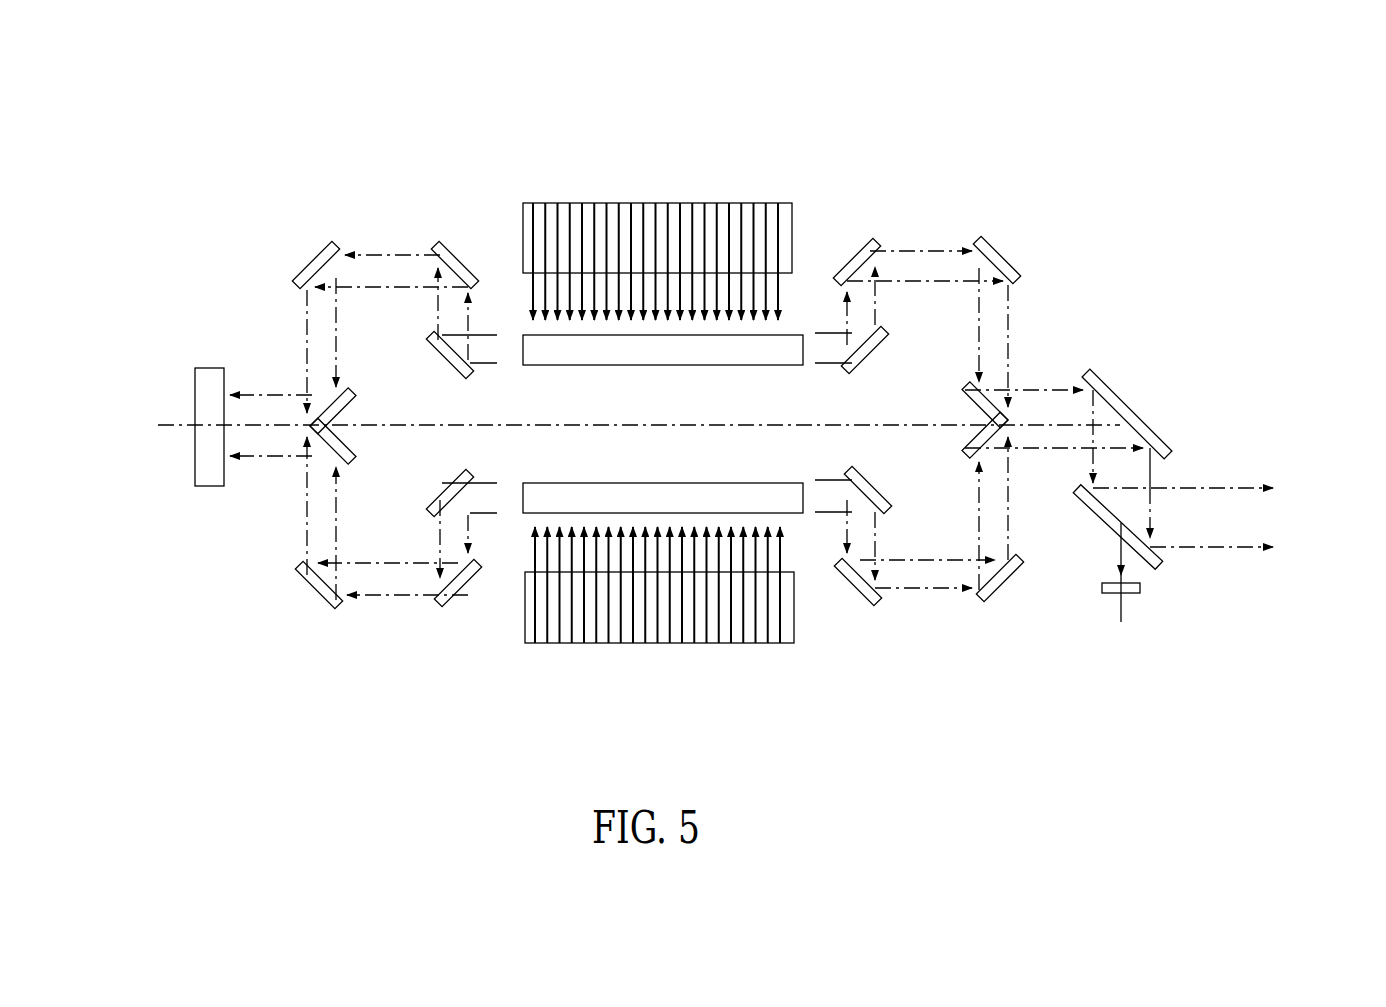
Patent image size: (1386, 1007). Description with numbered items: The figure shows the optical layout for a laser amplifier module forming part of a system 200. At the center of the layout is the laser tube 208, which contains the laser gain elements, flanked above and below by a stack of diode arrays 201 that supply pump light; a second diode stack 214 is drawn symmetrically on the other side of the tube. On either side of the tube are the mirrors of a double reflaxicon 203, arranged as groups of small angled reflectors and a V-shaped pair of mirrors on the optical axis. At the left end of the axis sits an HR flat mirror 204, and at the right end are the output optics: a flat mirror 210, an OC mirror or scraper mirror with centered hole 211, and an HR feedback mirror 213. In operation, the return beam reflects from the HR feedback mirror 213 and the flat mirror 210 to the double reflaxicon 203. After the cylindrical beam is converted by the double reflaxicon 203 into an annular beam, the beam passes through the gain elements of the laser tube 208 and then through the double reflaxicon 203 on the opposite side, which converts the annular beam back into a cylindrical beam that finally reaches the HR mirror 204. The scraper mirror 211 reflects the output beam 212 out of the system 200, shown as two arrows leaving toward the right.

The system 200 is at (837, 675).
The stack of diode arrays 201 is at (590, 200).
The double reflaxicon 203 is at (312, 397).
The HR flat mirror 204 is at (190, 465).
The laser tube 208 is at (538, 330).
The flat mirror 210 is at (1130, 400).
The OC mirror or scraper mirror with centered hole 211 is at (1168, 563).
The beam 212 is at (1265, 480).
The HR feedback mirror 213 is at (1107, 597).
The pump light source array 214 is at (545, 548).